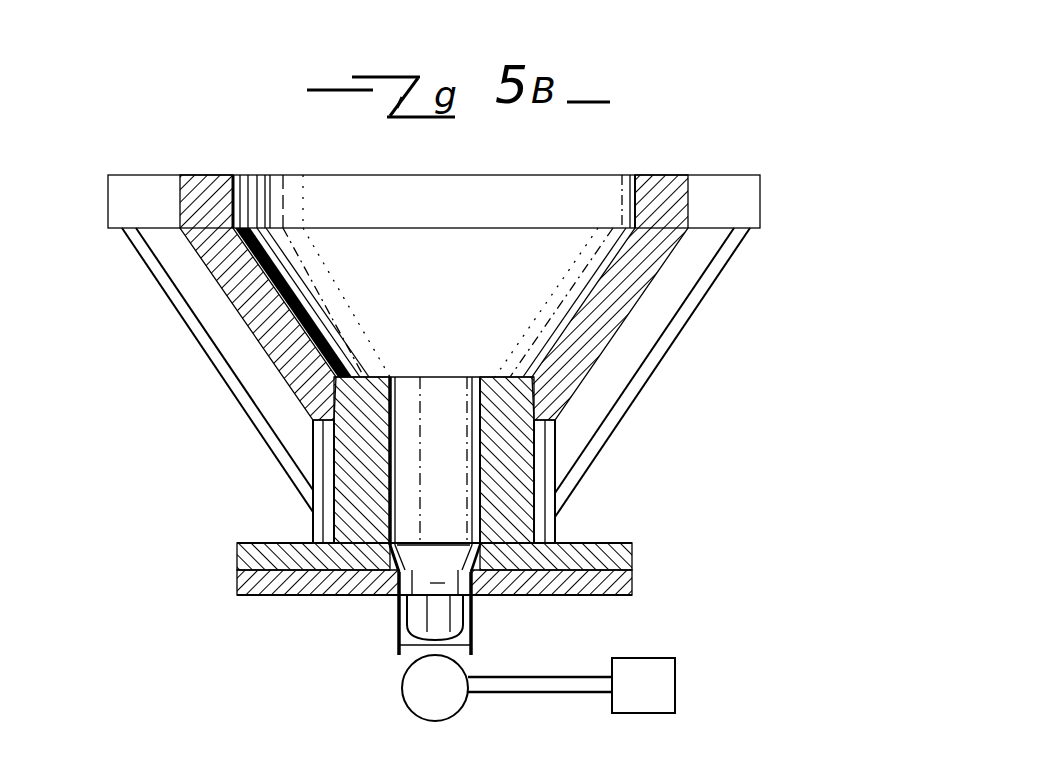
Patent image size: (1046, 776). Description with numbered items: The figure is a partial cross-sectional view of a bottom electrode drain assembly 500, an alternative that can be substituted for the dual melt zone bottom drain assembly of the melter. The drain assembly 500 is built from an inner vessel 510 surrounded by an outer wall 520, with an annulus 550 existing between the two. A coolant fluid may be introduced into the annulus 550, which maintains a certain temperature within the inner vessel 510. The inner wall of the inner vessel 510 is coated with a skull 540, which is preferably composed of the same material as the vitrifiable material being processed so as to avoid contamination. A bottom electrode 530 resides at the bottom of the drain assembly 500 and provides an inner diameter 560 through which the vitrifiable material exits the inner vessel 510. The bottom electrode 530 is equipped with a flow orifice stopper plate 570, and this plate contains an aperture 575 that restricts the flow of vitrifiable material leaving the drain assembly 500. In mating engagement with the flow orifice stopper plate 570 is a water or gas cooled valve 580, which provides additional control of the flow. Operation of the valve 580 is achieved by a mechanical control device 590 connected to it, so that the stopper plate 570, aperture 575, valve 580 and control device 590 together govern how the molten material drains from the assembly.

The bottom electrode drain assembly 500 is at (797, 150).
The inner vessel 510 is at (393, 258).
The outer wall 520 is at (204, 349).
The bottom electrode 530 is at (345, 512).
The skull 540 is at (232, 272).
The annulus 550 is at (275, 421).
The inner diameter 560 is at (458, 495).
The flow orifice stopper plate 570 is at (302, 586).
The aperture 575 is at (470, 592).
The water or gas cooled valve 580 is at (466, 707).
The mechanical control device 590 is at (676, 690).